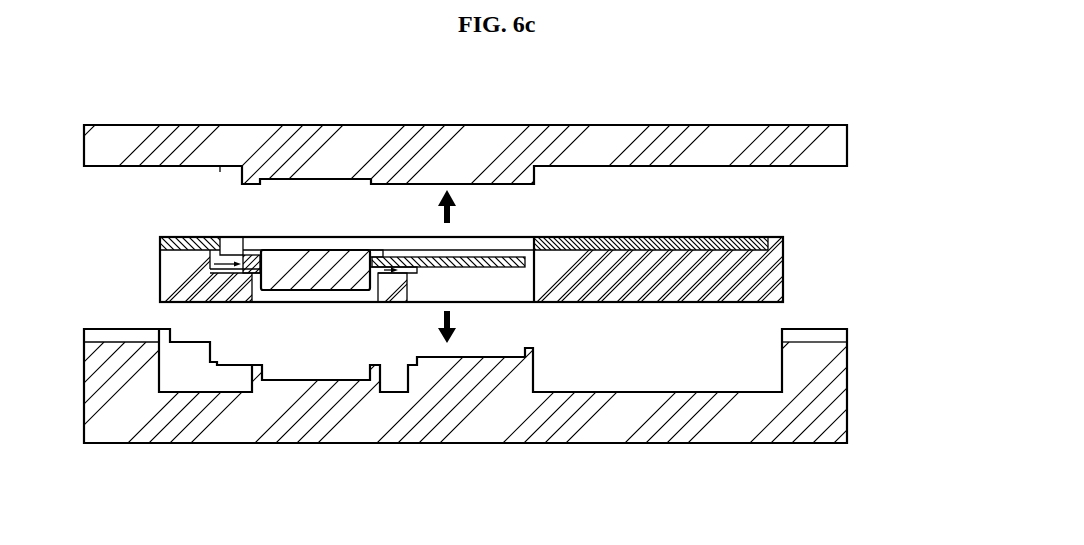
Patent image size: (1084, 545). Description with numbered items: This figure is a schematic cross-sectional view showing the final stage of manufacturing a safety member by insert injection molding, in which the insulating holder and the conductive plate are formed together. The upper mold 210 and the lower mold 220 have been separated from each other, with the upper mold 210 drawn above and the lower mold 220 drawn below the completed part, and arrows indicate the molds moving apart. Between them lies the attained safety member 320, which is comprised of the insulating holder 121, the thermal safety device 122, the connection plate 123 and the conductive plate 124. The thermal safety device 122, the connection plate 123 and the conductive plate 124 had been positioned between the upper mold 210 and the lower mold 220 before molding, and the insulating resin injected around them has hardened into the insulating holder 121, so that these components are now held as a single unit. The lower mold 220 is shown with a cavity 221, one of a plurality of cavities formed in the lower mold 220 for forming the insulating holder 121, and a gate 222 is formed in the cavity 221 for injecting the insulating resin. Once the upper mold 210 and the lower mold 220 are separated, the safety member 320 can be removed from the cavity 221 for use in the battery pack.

The upper mold 210 is at (738, 138).
The insulating holder 121 is at (798, 268).
The thermal safety device 122 is at (318, 240).
The connection plate 123 is at (487, 241).
The conductive plate 124 is at (719, 228).
The safety member 320 is at (146, 249).
The lower mold 220 is at (807, 433).
The cavity 221 is at (702, 383).
The gate 222 is at (835, 333).